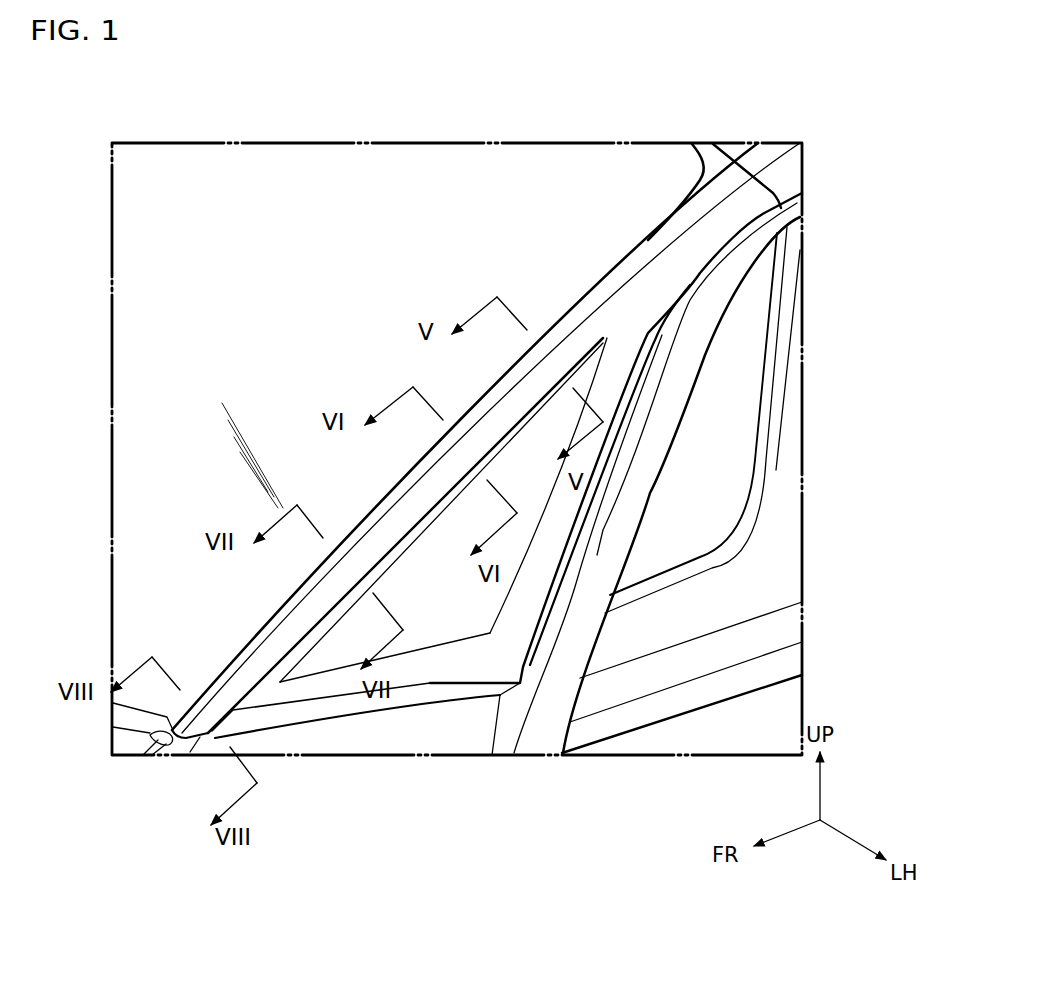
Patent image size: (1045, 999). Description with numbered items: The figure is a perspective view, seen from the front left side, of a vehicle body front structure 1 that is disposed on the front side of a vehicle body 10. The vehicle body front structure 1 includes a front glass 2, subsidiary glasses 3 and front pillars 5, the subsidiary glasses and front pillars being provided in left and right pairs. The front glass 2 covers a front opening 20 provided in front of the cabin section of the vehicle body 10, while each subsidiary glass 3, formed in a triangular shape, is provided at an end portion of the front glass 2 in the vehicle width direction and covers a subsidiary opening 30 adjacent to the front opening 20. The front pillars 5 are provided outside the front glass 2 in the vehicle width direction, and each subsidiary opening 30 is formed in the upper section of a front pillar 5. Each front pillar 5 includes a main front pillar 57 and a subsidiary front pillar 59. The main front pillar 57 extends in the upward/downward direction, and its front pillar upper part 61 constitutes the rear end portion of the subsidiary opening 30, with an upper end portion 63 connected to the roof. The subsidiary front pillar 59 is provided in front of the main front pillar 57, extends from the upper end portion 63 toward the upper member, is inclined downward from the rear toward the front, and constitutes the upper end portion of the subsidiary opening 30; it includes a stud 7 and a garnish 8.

The vehicle body front structure 1 is at (820, 392).
The front glass 2 is at (293, 277).
The subsidiary glass 3 is at (520, 477).
The front pillar 5 is at (653, 220).
The stud 7 is at (303, 660).
The garnish 8 is at (510, 403).
The vehicle body 10 is at (838, 296).
The front opening 20 is at (570, 295).
The subsidiary opening 30 is at (420, 628).
The main front pillar 57 is at (656, 496).
The subsidiary front pillar 59 is at (246, 606).
The front pillar upper part 61 is at (663, 371).
The upper end portion 63 is at (753, 212).